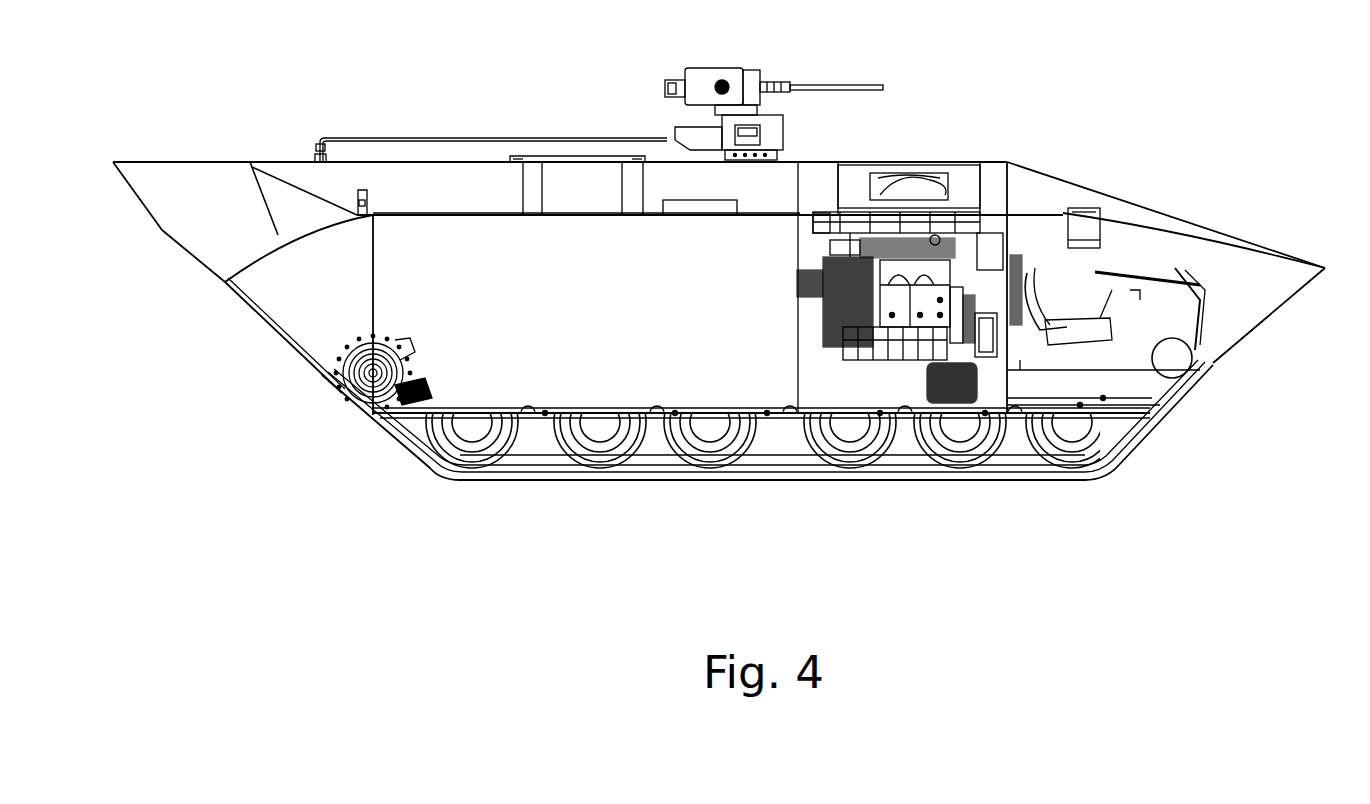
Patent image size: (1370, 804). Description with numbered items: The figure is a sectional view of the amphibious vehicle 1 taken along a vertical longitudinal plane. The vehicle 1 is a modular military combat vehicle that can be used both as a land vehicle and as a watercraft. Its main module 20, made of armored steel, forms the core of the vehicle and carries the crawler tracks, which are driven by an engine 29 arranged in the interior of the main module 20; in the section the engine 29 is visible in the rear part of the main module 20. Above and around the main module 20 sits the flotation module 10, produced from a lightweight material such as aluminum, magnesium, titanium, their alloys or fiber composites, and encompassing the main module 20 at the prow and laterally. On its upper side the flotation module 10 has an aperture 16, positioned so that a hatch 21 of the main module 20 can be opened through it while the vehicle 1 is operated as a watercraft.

The amphibious vehicle 1 is at (1026, 127).
The flotation module 10 is at (207, 200).
The aperture 16 is at (570, 177).
The main module 20 is at (470, 305).
The hatch 21 is at (582, 215).
The engine 29 is at (910, 303).